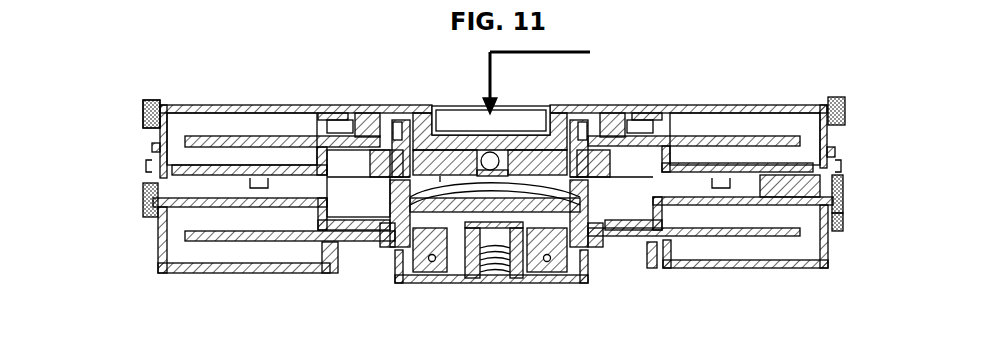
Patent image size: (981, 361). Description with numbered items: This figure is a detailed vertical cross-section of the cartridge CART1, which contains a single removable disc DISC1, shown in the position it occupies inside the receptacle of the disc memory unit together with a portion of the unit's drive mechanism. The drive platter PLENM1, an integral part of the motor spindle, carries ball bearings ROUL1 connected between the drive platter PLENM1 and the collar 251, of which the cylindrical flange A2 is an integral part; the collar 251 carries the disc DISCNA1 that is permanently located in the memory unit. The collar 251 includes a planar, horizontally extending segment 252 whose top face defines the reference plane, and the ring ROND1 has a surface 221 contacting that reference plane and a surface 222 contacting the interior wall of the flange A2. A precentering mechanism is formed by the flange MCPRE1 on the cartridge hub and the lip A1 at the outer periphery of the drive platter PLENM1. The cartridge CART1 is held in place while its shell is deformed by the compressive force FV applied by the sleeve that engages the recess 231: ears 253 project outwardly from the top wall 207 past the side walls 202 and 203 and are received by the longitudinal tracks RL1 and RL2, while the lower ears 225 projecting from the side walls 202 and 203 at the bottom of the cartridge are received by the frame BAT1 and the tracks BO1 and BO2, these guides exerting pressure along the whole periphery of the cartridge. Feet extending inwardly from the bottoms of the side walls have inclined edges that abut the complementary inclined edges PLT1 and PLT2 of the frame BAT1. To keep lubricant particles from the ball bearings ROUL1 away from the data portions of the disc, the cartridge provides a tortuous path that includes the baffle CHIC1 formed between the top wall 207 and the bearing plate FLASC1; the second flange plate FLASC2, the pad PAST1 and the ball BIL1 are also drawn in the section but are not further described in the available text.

The top wall 207 is at (200, 104).
The side wall 202 is at (160, 138).
The side wall 203 is at (832, 132).
The ear 253 is at (150, 108).
The collar 251 is at (143, 197).
The planar horizontally extending segment 252 is at (175, 215).
The ears 225 is at (843, 195).
The recess 231 is at (540, 118).
The surface 221 is at (445, 175).
The surface 222 is at (455, 255).
The cartridge CART1 is at (240, 105).
The track RL1 is at (156, 100).
The track RL2 is at (846, 97).
The track BO1 is at (144, 167).
The track BO2 is at (854, 170).
The frame BAT1 is at (152, 250).
The bearing plate FLASC1 is at (615, 105).
The lower flange FLASC2 is at (222, 150).
The disc DISC1 is at (688, 125).
The disc DISCNA1 is at (688, 258).
The inclined edge PLT1 is at (210, 198).
The inclined edge PLT2 is at (800, 204).
The cylindrical flange A1 is at (268, 198).
The cylindrical flange A2 is at (600, 193).
The flange MCPRE1 is at (262, 180).
The baffle CHIC1 is at (368, 106).
The pad PAST1 is at (487, 158).
The ball BIL1 is at (502, 160).
The compressive force FV is at (486, 58).
The ring ROND1 is at (592, 172).
The ball bearings ROUL1 is at (442, 262).
The drive platter PLENM1 is at (528, 282).